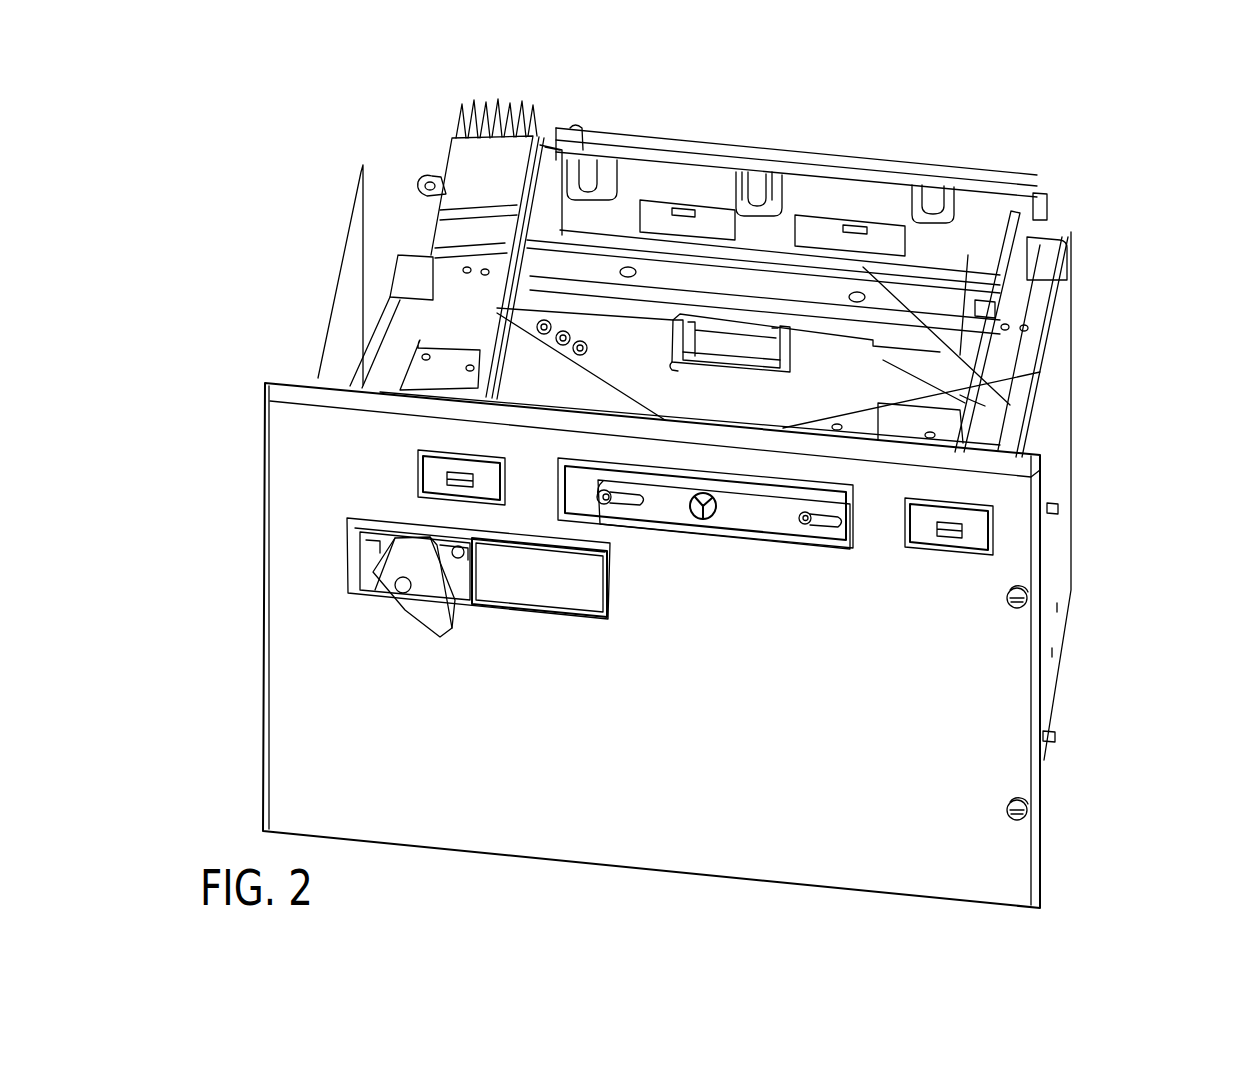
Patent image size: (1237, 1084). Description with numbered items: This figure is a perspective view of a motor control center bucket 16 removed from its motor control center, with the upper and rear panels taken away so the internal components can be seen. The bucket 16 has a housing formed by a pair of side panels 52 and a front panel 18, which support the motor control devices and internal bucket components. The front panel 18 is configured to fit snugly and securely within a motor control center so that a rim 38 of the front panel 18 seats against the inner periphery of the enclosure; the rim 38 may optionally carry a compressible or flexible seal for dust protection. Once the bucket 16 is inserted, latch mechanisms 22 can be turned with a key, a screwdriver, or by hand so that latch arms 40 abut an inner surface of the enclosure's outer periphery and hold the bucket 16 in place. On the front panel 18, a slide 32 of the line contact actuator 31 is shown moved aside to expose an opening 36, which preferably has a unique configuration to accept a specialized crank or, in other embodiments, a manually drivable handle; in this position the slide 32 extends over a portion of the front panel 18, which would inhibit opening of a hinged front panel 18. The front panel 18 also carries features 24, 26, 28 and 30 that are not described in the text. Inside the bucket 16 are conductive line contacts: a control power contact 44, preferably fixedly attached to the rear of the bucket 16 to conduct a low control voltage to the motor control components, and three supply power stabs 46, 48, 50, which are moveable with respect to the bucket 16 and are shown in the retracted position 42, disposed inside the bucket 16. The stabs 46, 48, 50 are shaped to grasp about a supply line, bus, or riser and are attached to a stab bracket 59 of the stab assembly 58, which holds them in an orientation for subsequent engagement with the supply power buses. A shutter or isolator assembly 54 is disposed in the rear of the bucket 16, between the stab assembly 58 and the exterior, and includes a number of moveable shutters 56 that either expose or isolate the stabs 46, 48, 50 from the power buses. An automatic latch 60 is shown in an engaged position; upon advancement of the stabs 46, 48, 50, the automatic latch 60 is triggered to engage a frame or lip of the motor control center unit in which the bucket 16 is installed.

The motor control center bucket 16 is at (1150, 397).
The front panel 18 is at (673, 704).
The latch mechanisms 22 is at (1022, 607).
The indicator window 24 is at (437, 478).
The indicator window 26 is at (973, 543).
The display opening 28 is at (528, 598).
The lever 30 is at (412, 608).
The line contact actuator 31 is at (648, 566).
The slide 32 is at (762, 520).
The opening 36 is at (700, 514).
The rim 38 is at (292, 380).
The latch arms 40 is at (1058, 503).
The retracted position 42 is at (716, 205).
The control power contact 44 is at (540, 92).
The supply power stab 46 is at (594, 207).
The supply power stab 48 is at (773, 225).
The supply power stab 50 is at (947, 235).
The side panels 52 is at (347, 232).
The shutter or isolator assembly 54 is at (718, 176).
The moveable shutters 56 is at (671, 197).
The stab assembly 58 is at (985, 305).
The stab bracket 59 is at (985, 406).
The automatic latch 60 is at (792, 343).